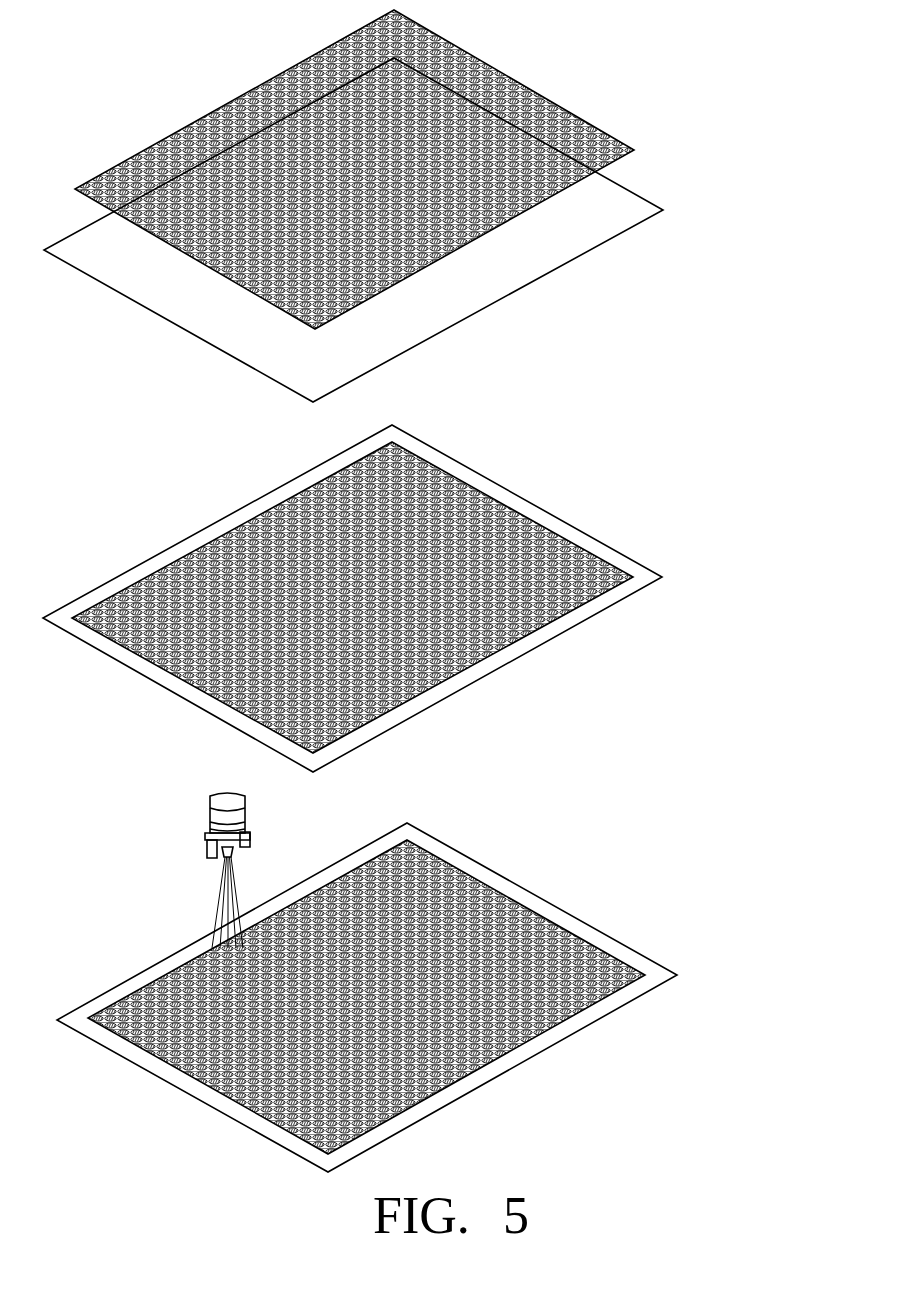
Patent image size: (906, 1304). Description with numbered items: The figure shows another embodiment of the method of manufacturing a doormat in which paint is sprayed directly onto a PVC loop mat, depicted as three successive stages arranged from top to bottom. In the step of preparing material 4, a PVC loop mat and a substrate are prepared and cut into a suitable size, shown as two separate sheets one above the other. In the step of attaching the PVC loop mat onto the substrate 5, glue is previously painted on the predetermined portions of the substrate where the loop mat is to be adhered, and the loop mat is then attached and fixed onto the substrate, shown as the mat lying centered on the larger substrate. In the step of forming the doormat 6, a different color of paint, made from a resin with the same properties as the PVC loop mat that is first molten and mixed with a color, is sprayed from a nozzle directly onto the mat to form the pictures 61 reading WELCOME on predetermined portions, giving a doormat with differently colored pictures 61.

The step of preparing material 4 is at (417, 206).
The step of attaching the PVC loop mat onto the substrate 5 is at (415, 591).
The step of forming the doormat 6 is at (407, 982).
The pictures 61 is at (200, 1082).